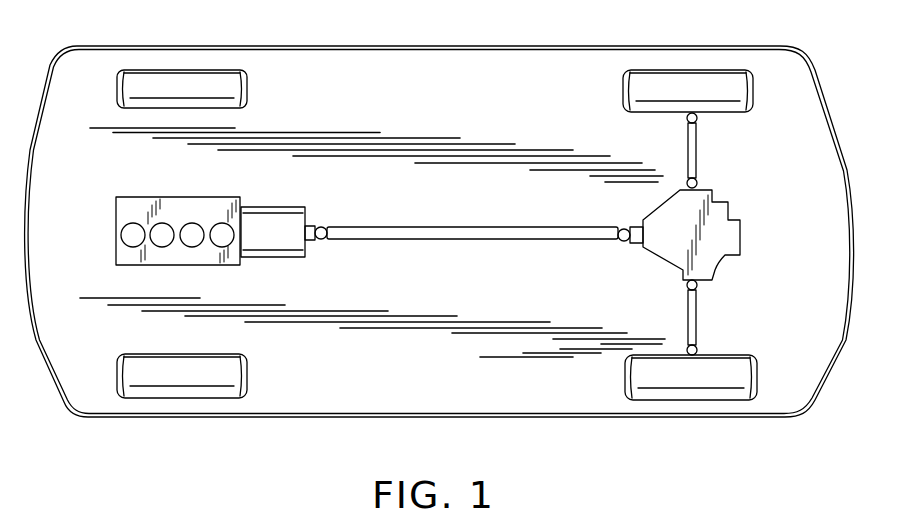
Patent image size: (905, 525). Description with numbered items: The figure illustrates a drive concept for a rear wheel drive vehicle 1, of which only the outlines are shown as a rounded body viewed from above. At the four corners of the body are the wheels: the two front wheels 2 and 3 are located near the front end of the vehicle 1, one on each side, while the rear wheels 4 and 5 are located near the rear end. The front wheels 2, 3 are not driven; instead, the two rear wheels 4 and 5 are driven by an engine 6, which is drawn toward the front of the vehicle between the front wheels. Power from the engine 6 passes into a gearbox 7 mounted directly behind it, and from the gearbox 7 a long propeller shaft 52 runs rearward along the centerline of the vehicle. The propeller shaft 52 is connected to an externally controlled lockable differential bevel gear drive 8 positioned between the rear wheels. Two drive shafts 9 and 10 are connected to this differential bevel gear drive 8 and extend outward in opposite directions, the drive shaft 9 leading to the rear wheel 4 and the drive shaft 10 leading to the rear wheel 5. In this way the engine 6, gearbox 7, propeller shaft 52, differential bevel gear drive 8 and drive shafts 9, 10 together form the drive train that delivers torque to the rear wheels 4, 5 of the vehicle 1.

The vehicle 1 is at (368, 408).
The front wheel 2 is at (193, 85).
The front wheel 3 is at (193, 388).
The rear wheel 4 is at (680, 88).
The rear wheel 5 is at (720, 392).
The engine 6 is at (125, 207).
The gearbox 7 is at (285, 216).
The externally controlled lockable differential bevel gear drive 8 is at (725, 241).
The drive shaft 9 is at (697, 166).
The drive shaft 10 is at (697, 327).
The propeller shaft 52 is at (425, 232).